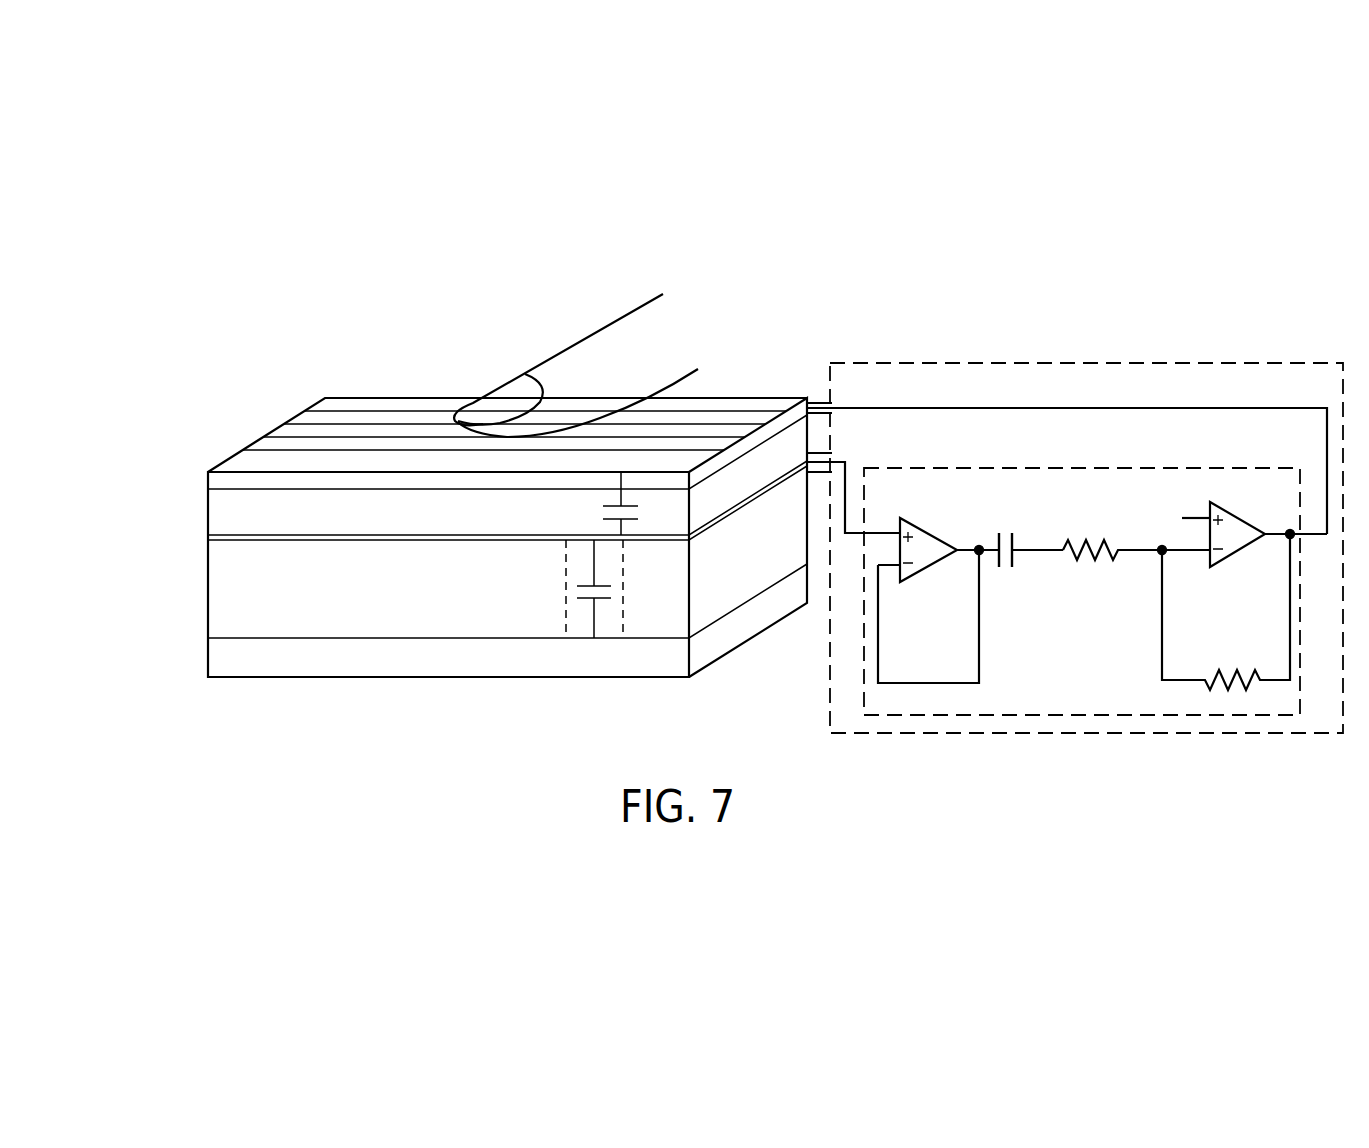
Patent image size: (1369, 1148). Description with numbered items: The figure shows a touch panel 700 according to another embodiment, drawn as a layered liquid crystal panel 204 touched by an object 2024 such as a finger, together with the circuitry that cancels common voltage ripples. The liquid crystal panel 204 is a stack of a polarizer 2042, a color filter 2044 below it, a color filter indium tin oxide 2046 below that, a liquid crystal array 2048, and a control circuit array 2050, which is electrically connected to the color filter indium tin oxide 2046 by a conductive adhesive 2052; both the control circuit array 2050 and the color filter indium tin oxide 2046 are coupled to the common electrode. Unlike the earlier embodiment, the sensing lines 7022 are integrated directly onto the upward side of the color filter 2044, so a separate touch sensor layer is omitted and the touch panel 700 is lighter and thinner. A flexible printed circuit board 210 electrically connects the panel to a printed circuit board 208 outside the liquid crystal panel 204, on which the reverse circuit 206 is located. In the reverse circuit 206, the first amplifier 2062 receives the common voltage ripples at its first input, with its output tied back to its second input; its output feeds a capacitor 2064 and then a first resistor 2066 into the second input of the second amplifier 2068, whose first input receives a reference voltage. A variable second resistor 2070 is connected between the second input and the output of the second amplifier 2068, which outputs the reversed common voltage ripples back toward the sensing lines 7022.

The touch panel 700 is at (1050, 218).
The sensing lines 7022 is at (345, 410).
The object 2024 is at (597, 347).
The liquid crystal panel 204 is at (128, 457).
The polarizer 2042 is at (209, 484).
The color filter 2044 is at (209, 520).
The color filter indium tin oxide 2046 is at (222, 538).
The liquid crystal array 2048 is at (209, 620).
The control circuit array 2050 is at (209, 663).
The conductive adhesive 2052 is at (623, 603).
The flexible printed circuit board 210 is at (820, 400).
The printed circuit board 208 is at (1215, 363).
The reverse circuit 206 is at (1192, 468).
The first amplifier 2062 is at (917, 526).
The capacitor 2064 is at (1005, 570).
The first resistor 2066 is at (1090, 567).
The second amplifier 2068 is at (1219, 504).
The second resistor 2070 is at (1233, 670).